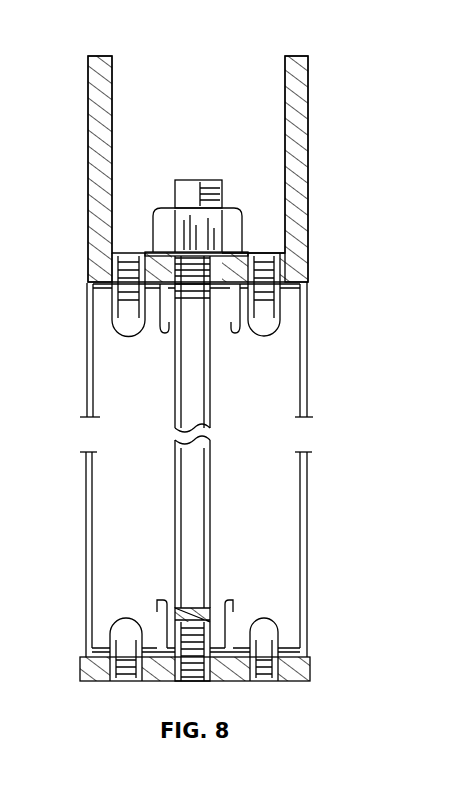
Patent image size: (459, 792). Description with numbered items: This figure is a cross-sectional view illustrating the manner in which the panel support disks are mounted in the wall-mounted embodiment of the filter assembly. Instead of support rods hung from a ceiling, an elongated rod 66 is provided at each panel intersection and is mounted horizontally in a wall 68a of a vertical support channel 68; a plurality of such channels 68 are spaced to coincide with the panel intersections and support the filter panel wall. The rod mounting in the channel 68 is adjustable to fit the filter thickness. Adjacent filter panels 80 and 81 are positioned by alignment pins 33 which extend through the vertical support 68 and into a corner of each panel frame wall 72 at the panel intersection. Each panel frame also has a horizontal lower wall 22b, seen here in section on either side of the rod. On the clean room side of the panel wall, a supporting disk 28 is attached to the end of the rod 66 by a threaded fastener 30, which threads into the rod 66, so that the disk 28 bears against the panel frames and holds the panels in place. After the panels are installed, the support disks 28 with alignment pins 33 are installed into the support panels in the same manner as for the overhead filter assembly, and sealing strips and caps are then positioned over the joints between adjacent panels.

The vertical support channel 68 is at (118, 136).
The wall of vertical support channel 68a is at (247, 253).
The panel frame wall 72 is at (94, 281).
The elongated rod 66 is at (210, 400).
The alignment pins 33 is at (135, 328).
The filter panel 80 is at (76, 359).
The filter panel 81 is at (318, 346).
The horizontal lower wall 22b is at (86, 603).
The support disk 28 is at (170, 682).
The threaded fastener 30 is at (205, 682).